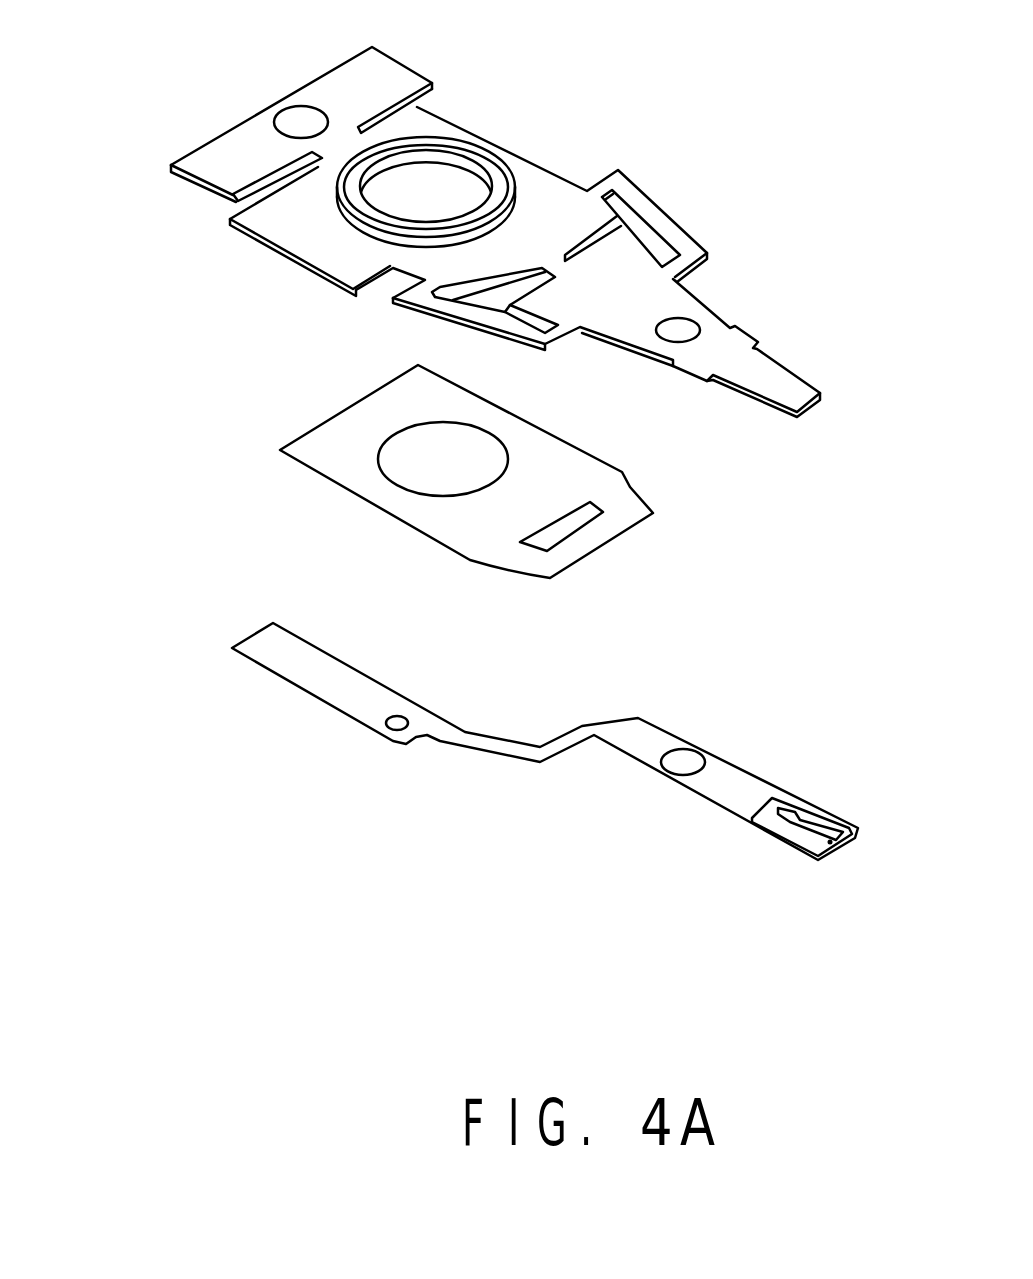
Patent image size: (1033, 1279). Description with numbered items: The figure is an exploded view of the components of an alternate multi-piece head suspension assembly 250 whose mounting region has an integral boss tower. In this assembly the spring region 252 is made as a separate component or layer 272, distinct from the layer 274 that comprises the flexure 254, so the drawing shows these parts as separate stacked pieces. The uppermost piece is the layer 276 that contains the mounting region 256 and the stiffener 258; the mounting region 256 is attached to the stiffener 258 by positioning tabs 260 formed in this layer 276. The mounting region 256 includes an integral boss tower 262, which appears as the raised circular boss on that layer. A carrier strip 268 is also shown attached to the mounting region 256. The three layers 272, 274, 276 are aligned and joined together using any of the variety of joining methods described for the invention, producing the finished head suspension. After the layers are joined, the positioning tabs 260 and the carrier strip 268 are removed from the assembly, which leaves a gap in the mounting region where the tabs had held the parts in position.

The multi-piece head suspension assembly 250 is at (258, 583).
The spring region 252 is at (312, 445).
The flexure 254 is at (748, 806).
The mounting region 256 is at (437, 122).
The stiffener 258 is at (650, 278).
The positioning tabs 260 is at (657, 225).
The integral boss tower 262 is at (355, 212).
The carrier strip 268 is at (233, 147).
The layer 272 is at (628, 474).
The layer 274 is at (685, 740).
The layer 276 is at (552, 168).